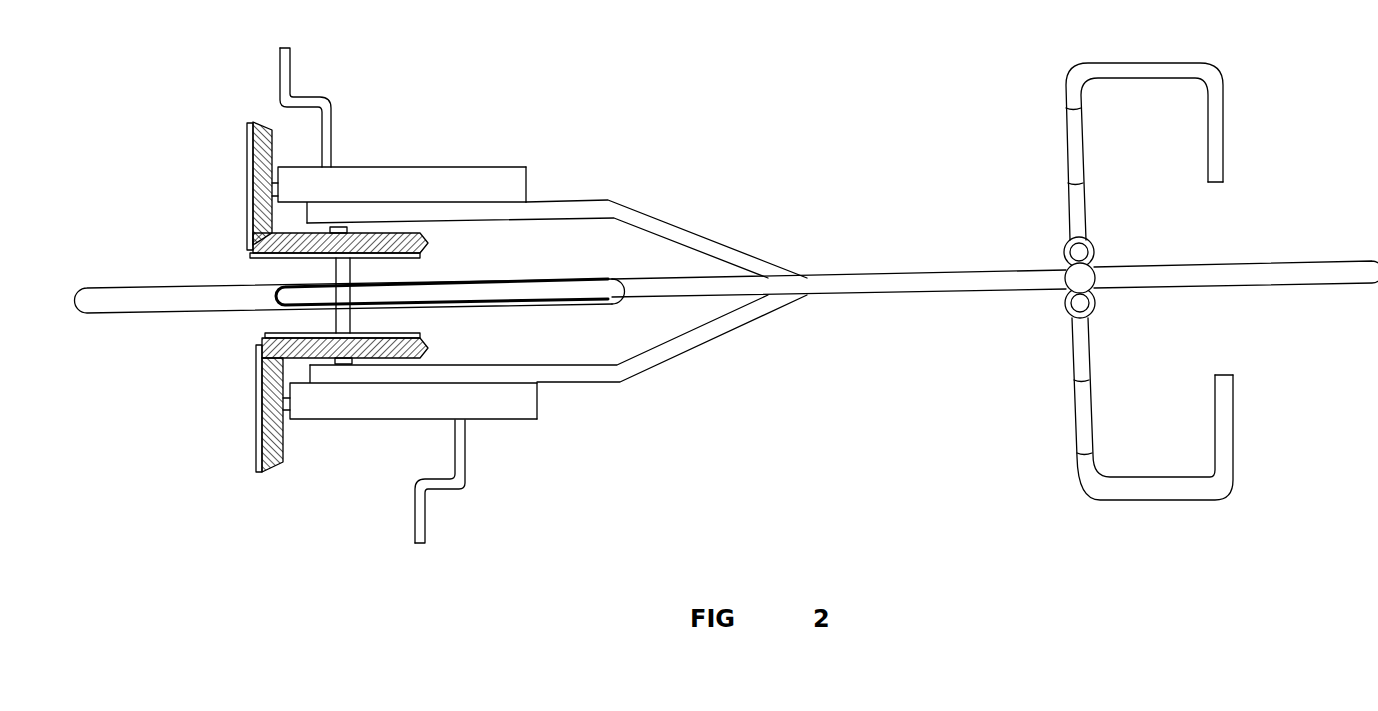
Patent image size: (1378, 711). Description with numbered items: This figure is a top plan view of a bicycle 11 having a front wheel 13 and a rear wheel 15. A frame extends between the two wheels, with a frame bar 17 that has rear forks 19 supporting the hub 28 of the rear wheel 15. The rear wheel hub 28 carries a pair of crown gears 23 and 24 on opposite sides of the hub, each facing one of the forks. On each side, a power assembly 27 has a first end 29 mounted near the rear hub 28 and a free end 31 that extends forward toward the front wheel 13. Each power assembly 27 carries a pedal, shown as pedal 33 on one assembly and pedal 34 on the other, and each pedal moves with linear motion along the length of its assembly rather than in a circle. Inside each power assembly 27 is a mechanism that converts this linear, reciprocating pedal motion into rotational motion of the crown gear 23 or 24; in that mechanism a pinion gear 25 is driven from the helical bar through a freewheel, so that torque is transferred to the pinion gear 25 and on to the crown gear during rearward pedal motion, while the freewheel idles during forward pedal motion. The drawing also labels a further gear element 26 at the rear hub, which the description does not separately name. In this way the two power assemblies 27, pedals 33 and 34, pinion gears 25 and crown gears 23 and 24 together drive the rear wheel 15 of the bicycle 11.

The bicycle 11 is at (822, 219).
The front wheel 13 is at (1326, 284).
The rear wheel 15 is at (118, 311).
The frame bar 17 is at (873, 292).
The rear forks 19 is at (658, 221).
The crown gear 23 is at (426, 346).
The crown gear 24 is at (416, 236).
The pinion gear 25 is at (258, 407).
The upper driven bevel gear 26 is at (250, 188).
The power assembly 27 is at (493, 174).
The rear wheel hub 28 is at (336, 272).
The first end 29 is at (297, 188).
The free end 31 is at (528, 178).
The pedal 33 is at (449, 508).
The pedal 34 is at (313, 68).